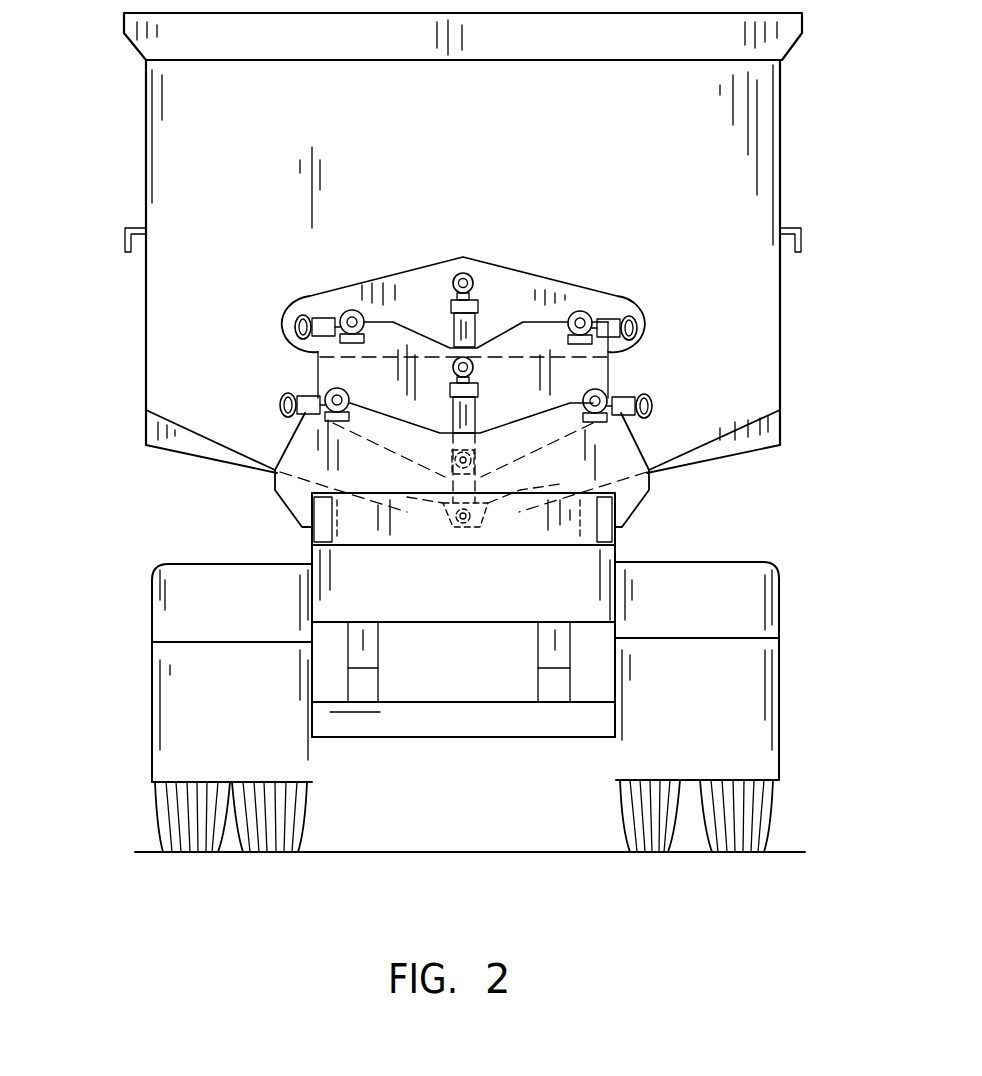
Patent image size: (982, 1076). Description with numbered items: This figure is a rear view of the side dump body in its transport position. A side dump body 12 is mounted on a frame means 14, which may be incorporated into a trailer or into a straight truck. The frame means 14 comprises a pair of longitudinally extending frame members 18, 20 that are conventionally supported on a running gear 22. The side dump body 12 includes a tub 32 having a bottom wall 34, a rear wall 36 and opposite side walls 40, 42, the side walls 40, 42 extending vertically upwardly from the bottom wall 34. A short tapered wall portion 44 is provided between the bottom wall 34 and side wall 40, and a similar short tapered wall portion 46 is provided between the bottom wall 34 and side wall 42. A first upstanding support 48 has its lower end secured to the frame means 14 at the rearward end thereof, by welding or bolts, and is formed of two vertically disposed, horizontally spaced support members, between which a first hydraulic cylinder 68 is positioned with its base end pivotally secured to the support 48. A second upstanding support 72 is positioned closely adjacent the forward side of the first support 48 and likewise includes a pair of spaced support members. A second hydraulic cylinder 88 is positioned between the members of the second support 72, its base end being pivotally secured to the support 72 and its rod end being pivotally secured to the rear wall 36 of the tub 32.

The side dump body 12 is at (476, 432).
The frame means 14 is at (474, 615).
The longitudinally extending frame member 18 is at (305, 532).
The longitudinally extending frame member 20 is at (625, 515).
The running gear 22 is at (148, 817).
The tub 32 is at (481, 266).
The bottom wall 34 is at (505, 500).
The rear wall 36 is at (434, 187).
The side wall 40 is at (143, 318).
The side wall 42 is at (783, 282).
The short tapered wall portion 44 is at (200, 457).
The short tapered wall portion 46 is at (707, 460).
The first upstanding support 48 is at (622, 440).
The first hydraulic cylinder 68 is at (465, 417).
The second upstanding support 72 is at (600, 377).
The second hydraulic cylinder 88 is at (470, 322).